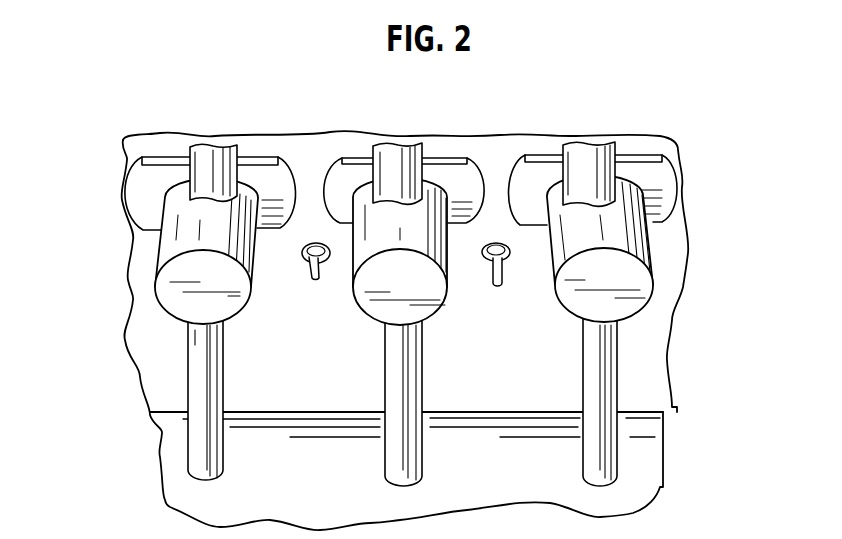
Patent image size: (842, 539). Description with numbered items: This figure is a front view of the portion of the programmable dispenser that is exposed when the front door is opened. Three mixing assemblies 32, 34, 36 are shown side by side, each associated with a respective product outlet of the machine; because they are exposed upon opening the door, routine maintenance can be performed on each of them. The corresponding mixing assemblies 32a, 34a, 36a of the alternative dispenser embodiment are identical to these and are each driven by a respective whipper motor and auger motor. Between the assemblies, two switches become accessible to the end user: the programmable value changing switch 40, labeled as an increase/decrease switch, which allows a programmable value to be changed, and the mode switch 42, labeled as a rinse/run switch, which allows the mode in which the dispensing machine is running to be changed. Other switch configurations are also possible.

The mixing assembly 32 is at (167, 272).
The mixing assembly 32a is at (206, 312).
The mixing assembly 34 is at (440, 183).
The mixing assembly 34a is at (400, 314).
The mixing assembly 36 is at (652, 246).
The mixing assembly 36a is at (600, 314).
The programmable value changing switch 40 is at (303, 235).
The mode switch 42 is at (498, 243).